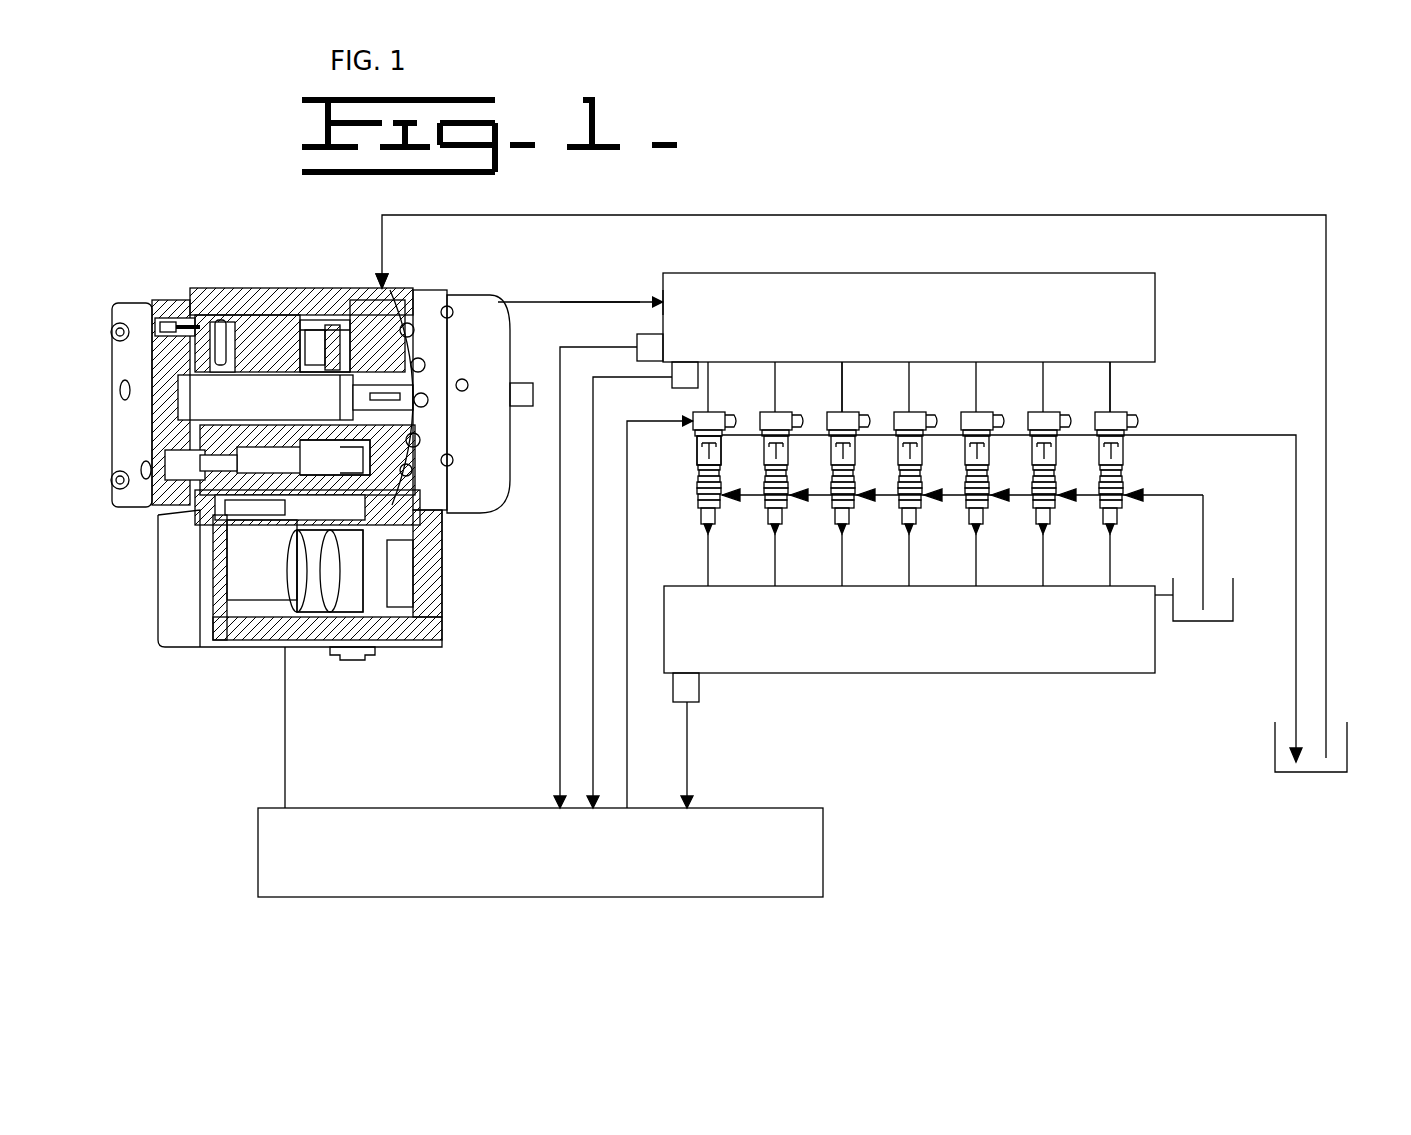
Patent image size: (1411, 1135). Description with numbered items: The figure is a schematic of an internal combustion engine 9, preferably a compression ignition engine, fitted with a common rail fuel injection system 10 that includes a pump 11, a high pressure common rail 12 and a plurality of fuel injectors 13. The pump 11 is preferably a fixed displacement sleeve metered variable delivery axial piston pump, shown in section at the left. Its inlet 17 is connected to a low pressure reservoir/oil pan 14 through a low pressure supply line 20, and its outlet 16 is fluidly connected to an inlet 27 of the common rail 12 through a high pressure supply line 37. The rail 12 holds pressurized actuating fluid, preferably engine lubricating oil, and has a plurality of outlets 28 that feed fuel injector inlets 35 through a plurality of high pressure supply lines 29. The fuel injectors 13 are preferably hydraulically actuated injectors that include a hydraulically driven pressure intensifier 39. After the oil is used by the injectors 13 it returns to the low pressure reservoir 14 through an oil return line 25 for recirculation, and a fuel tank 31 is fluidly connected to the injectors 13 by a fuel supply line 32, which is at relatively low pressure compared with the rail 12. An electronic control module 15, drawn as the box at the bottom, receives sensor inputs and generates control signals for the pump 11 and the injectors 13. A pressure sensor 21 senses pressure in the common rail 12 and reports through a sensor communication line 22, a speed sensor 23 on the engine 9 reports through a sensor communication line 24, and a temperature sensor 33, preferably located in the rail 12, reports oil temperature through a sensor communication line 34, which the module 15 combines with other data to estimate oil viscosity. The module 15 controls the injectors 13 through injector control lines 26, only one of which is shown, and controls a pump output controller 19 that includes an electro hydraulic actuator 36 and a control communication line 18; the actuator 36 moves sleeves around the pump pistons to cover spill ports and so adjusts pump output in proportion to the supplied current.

The internal combustion engine 9 is at (1155, 653).
The common rail fuel injection system 10 is at (975, 160).
The pump 11 is at (158, 555).
The high pressure common rail 12 is at (1010, 273).
The fuel injectors 13 is at (1122, 440).
The low pressure reservoir/oil pan 14 is at (1347, 738).
The electronic control module 15 is at (823, 860).
The outlet 16 is at (505, 302).
The inlet 17 is at (378, 285).
The control communication line 18 is at (285, 718).
The pump output controller 19 is at (195, 796).
The low pressure supply line 20 is at (872, 215).
The pressure sensor 21 is at (688, 378).
The sensor communication line 22 is at (585, 595).
The speed sensor 23 is at (699, 680).
The sensor communication line 24 is at (687, 763).
The oil return line 25 is at (1296, 448).
The injector control lines 26 is at (627, 545).
The inlet 27 is at (662, 285).
The outlets 28 is at (1112, 362).
The high pressure supply lines 29 is at (844, 387).
The fuel tank 31 is at (1160, 595).
The actuation fluid supply line 32 is at (1203, 495).
The temperature sensor 33 is at (637, 340).
The sensor communication line 34 is at (560, 548).
The fuel injector inlets 35 is at (709, 412).
The electro hydraulic actuator 36 is at (292, 600).
The high pressure supply line 37 is at (630, 302).
The hydraulically driven pressure intensifier 39 is at (703, 452).